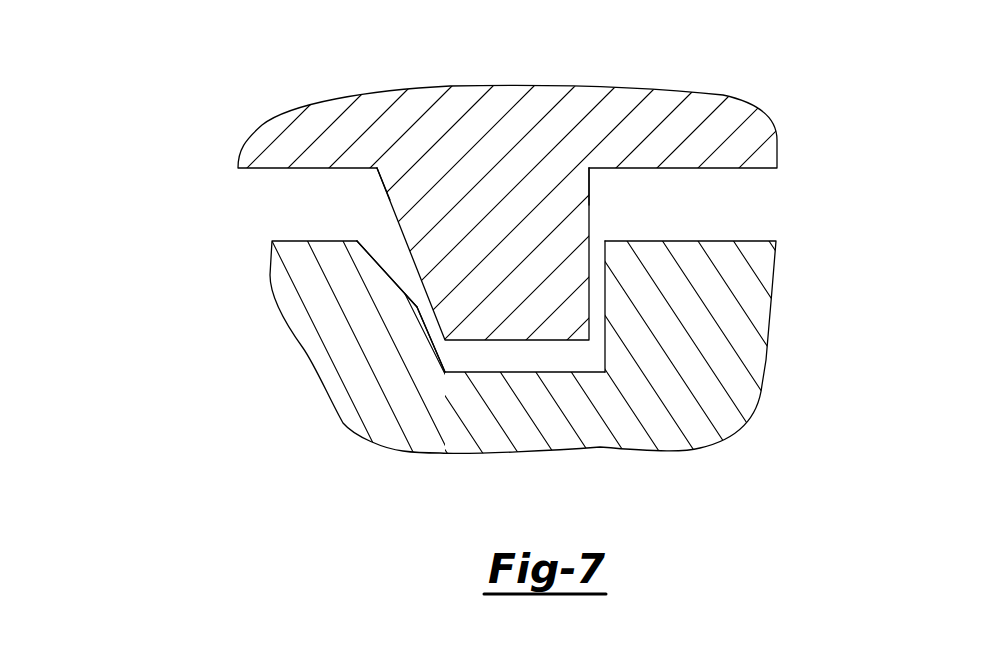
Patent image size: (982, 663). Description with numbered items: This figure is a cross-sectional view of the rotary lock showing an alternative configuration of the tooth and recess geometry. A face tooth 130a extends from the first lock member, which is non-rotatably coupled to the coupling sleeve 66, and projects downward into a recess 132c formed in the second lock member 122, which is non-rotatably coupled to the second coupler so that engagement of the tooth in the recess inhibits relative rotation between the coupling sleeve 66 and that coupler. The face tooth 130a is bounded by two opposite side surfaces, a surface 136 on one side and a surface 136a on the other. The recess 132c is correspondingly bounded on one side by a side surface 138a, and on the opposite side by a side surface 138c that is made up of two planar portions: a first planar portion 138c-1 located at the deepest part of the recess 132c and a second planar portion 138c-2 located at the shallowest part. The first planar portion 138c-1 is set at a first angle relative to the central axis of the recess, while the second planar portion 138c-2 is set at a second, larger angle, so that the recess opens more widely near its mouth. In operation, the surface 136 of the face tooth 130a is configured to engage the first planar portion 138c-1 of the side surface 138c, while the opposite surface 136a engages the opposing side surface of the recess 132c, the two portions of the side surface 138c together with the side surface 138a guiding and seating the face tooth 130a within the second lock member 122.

The coupling sleeve 66 is at (382, 113).
The face teeth 130a is at (500, 255).
The surface of face tooth 136 is at (390, 198).
The surface of face tooth 136a is at (590, 206).
The second lock member 122 is at (300, 285).
The tapered side surface 138a is at (605, 305).
The recess 132c is at (558, 355).
The side surface 138c is at (133, 368).
The first planar portion 138c-1 is at (440, 355).
The second planar portion 138c-2 is at (387, 275).